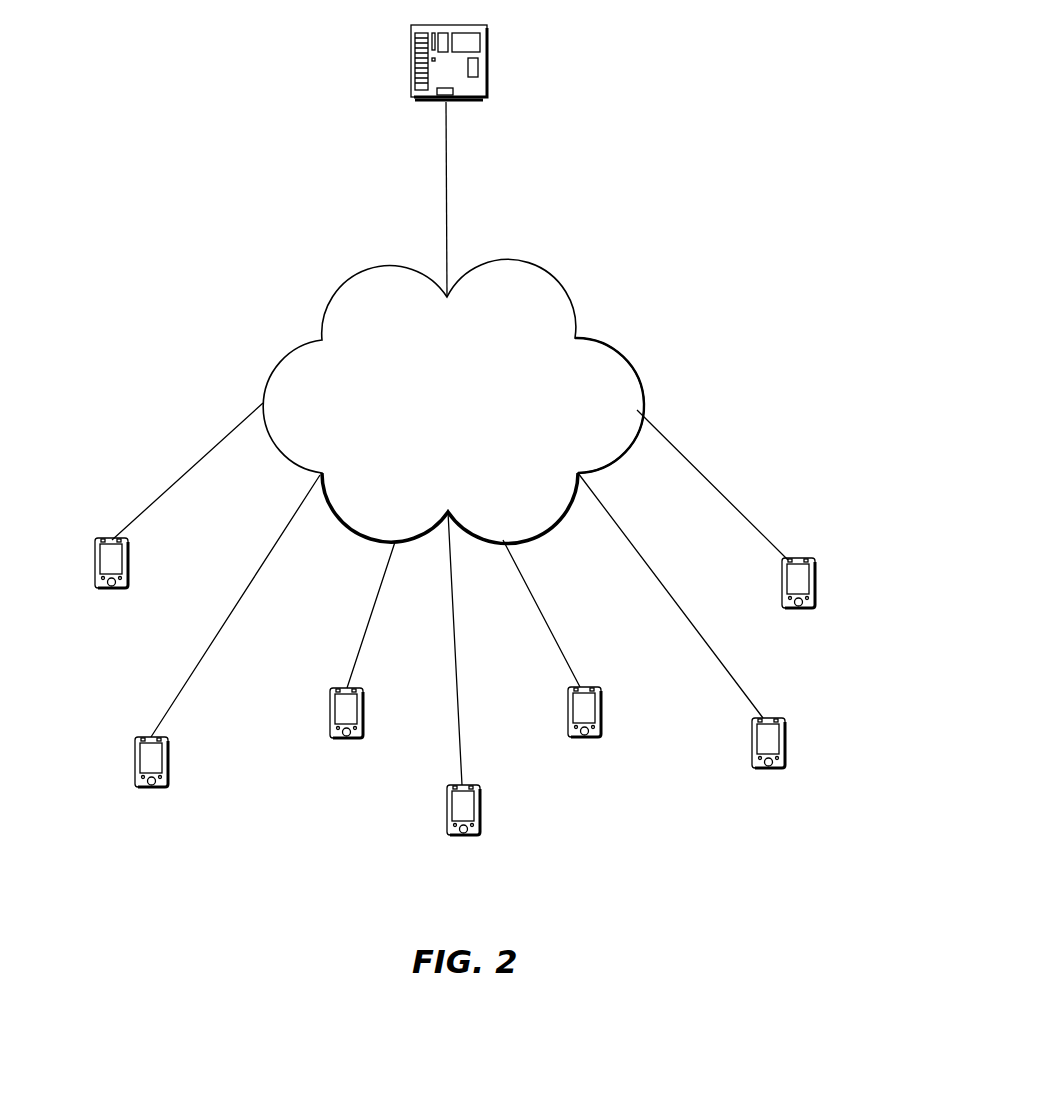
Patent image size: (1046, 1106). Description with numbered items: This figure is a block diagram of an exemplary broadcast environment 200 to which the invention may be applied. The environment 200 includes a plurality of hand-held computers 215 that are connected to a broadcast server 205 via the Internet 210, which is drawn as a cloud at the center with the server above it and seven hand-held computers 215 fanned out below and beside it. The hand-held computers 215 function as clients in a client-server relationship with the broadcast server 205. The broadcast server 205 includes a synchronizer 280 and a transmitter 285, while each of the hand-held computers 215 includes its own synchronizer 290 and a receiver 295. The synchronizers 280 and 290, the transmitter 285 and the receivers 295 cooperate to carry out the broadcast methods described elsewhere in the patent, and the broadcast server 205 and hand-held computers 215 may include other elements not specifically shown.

The broadcast environment 200 is at (645, 78).
The broadcast server 205 is at (449, 75).
The Internet 210 is at (618, 350).
The hand-held computer 215 is at (128, 559).
The synchronizer 280 is at (479, 66).
The transmitter 285 is at (487, 89).
The synchronizer 290 is at (96, 581).
The receiver 295 is at (105, 538).